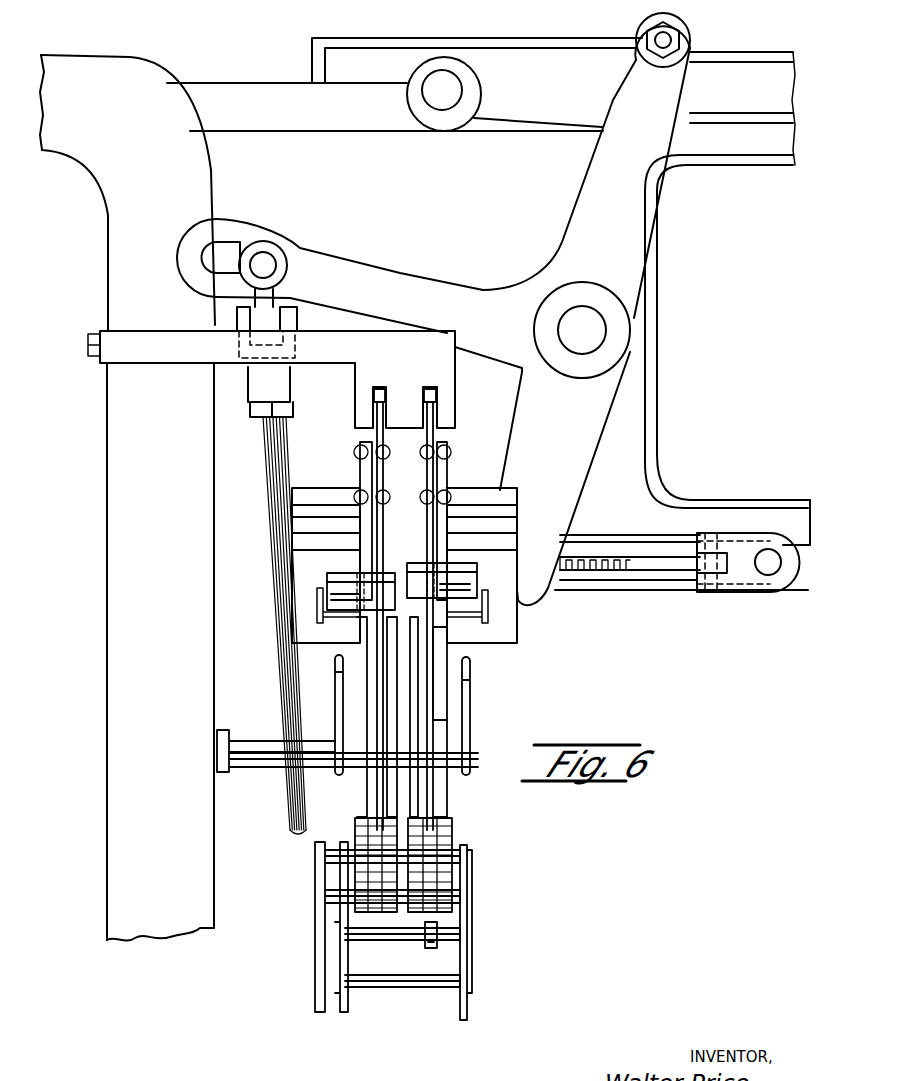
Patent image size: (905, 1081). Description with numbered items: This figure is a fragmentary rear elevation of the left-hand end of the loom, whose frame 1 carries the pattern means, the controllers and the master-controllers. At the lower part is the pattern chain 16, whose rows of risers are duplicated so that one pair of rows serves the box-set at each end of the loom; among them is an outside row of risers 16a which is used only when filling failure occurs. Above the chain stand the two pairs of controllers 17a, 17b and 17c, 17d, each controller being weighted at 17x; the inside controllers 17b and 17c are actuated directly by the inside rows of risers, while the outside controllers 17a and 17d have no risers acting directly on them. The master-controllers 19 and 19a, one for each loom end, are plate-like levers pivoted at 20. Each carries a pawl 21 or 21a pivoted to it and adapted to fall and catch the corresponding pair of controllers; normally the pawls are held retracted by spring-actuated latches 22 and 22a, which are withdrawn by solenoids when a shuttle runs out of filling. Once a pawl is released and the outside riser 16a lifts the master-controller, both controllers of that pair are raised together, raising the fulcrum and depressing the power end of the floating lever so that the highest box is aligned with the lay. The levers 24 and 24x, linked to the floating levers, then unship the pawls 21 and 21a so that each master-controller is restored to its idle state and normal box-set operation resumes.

The frame 1 is at (214, 868).
The pattern chain 16 is at (470, 957).
The outside row of risers 16a is at (432, 948).
The controller 17a is at (450, 708).
The controller 17b is at (415, 708).
The controller 17c is at (390, 652).
The controller 17d is at (360, 793).
The weight 17x is at (433, 843).
The master-controller 19 is at (432, 793).
The master-controller 19a is at (380, 627).
The pivot 20 is at (330, 847).
The pawl 21 is at (444, 442).
The pawl 21a is at (364, 442).
The spring-actuated latch 22 is at (427, 470).
The spring-actuated latch 22a is at (380, 537).
The lever 24 is at (471, 742).
The lever 24x is at (325, 715).